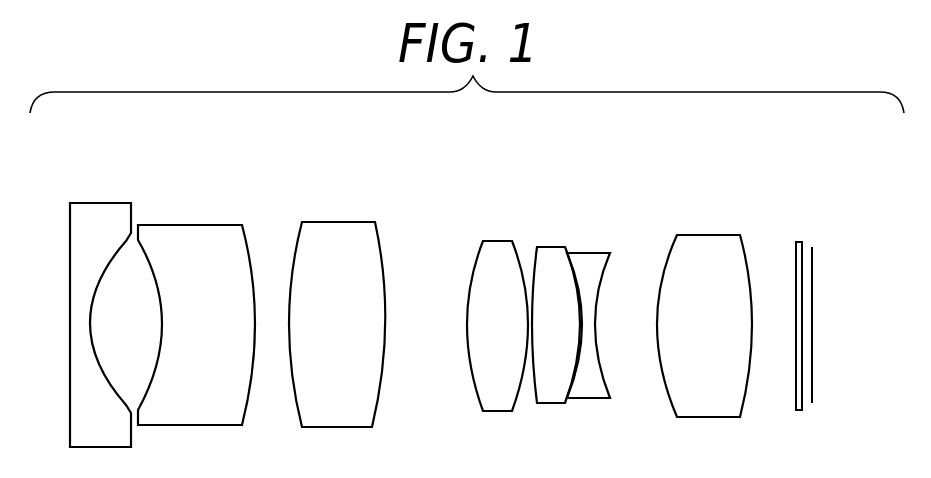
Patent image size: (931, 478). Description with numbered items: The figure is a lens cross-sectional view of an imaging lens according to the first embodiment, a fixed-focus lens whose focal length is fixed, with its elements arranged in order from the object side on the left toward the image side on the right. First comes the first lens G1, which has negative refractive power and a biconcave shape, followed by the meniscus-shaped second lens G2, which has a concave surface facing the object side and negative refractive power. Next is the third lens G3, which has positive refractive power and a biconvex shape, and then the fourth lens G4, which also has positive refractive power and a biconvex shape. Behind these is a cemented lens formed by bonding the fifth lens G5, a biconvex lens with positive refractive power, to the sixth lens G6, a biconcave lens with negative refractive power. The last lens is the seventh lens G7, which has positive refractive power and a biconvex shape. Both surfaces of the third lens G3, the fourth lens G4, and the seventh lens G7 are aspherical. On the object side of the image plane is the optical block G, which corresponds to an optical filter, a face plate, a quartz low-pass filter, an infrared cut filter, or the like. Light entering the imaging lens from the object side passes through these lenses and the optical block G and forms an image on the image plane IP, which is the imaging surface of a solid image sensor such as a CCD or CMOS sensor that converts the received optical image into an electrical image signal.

The first lens G1 is at (96, 209).
The second lens G2 is at (180, 226).
The third lens G3 is at (340, 222).
The fourth lens G4 is at (498, 243).
The fifth lens G5 is at (548, 248).
The sixth lens G6 is at (590, 253).
The seventh lens G7 is at (703, 236).
The optical block G is at (797, 240).
The image plane IP is at (813, 258).